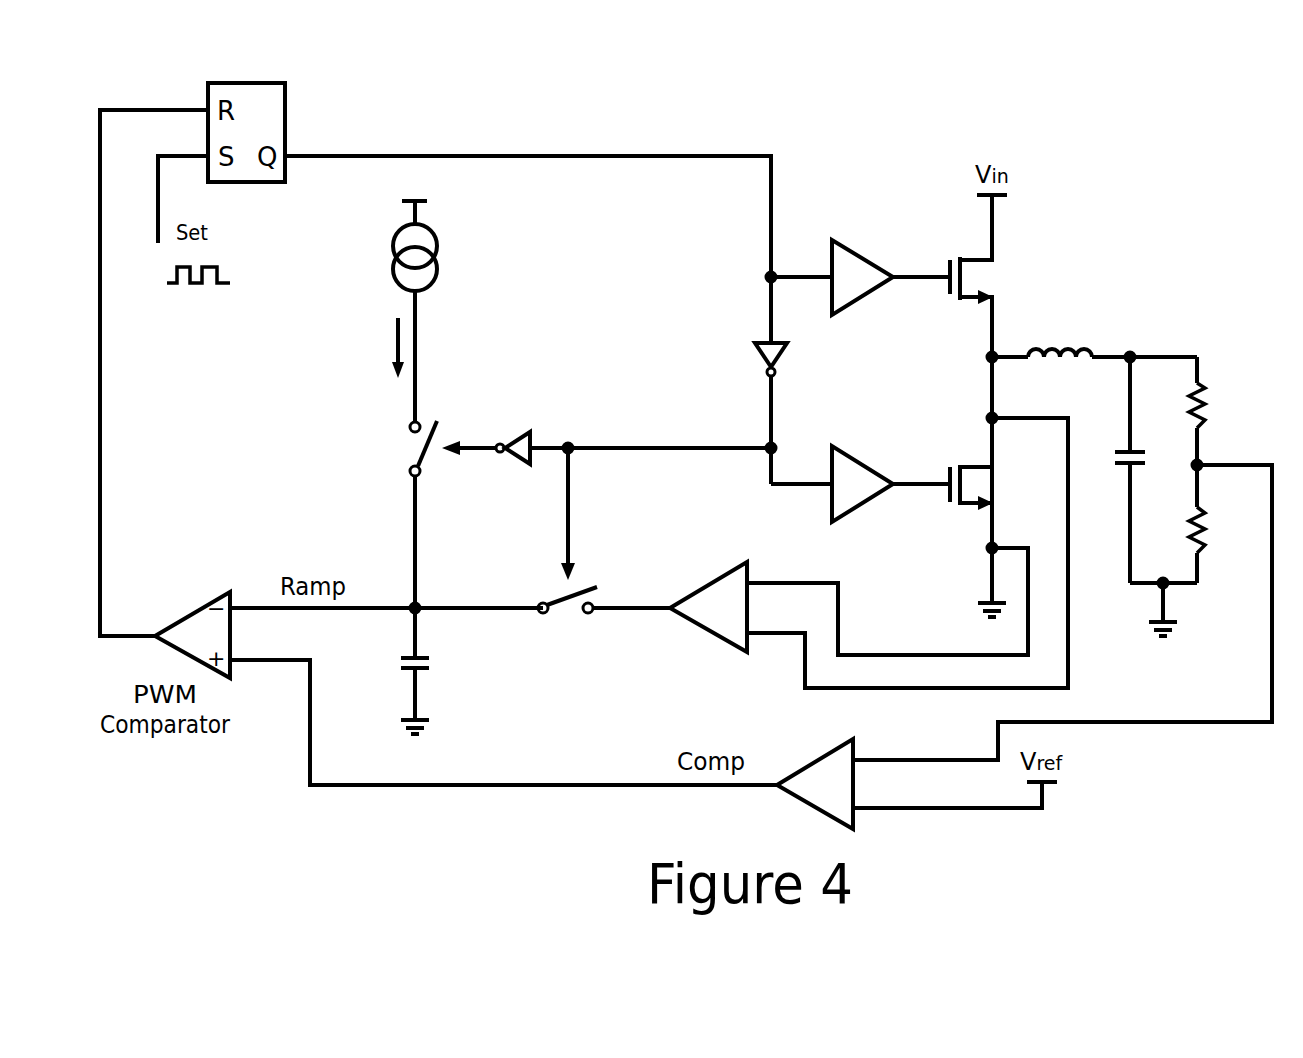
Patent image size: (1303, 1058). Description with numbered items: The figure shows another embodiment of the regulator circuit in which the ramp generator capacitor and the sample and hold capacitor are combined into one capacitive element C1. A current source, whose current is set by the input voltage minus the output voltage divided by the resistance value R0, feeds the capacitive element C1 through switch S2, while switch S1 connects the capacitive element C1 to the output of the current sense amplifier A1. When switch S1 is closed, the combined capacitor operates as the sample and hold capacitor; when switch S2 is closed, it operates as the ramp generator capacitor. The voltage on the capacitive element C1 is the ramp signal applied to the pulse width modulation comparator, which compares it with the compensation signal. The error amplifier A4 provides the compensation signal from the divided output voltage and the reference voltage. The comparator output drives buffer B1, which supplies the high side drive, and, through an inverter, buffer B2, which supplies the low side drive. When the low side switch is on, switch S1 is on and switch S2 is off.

The switch S1 is at (604, 616).
The switch S2 is at (404, 514).
The capacitive element C1 is at (398, 671).
The current sense amplifier A1 is at (688, 636).
The error amplifier A4 is at (797, 795).
The buffer B1 is at (860, 277).
The buffer B2 is at (860, 484).
The resistor R0 is at (583, 269).